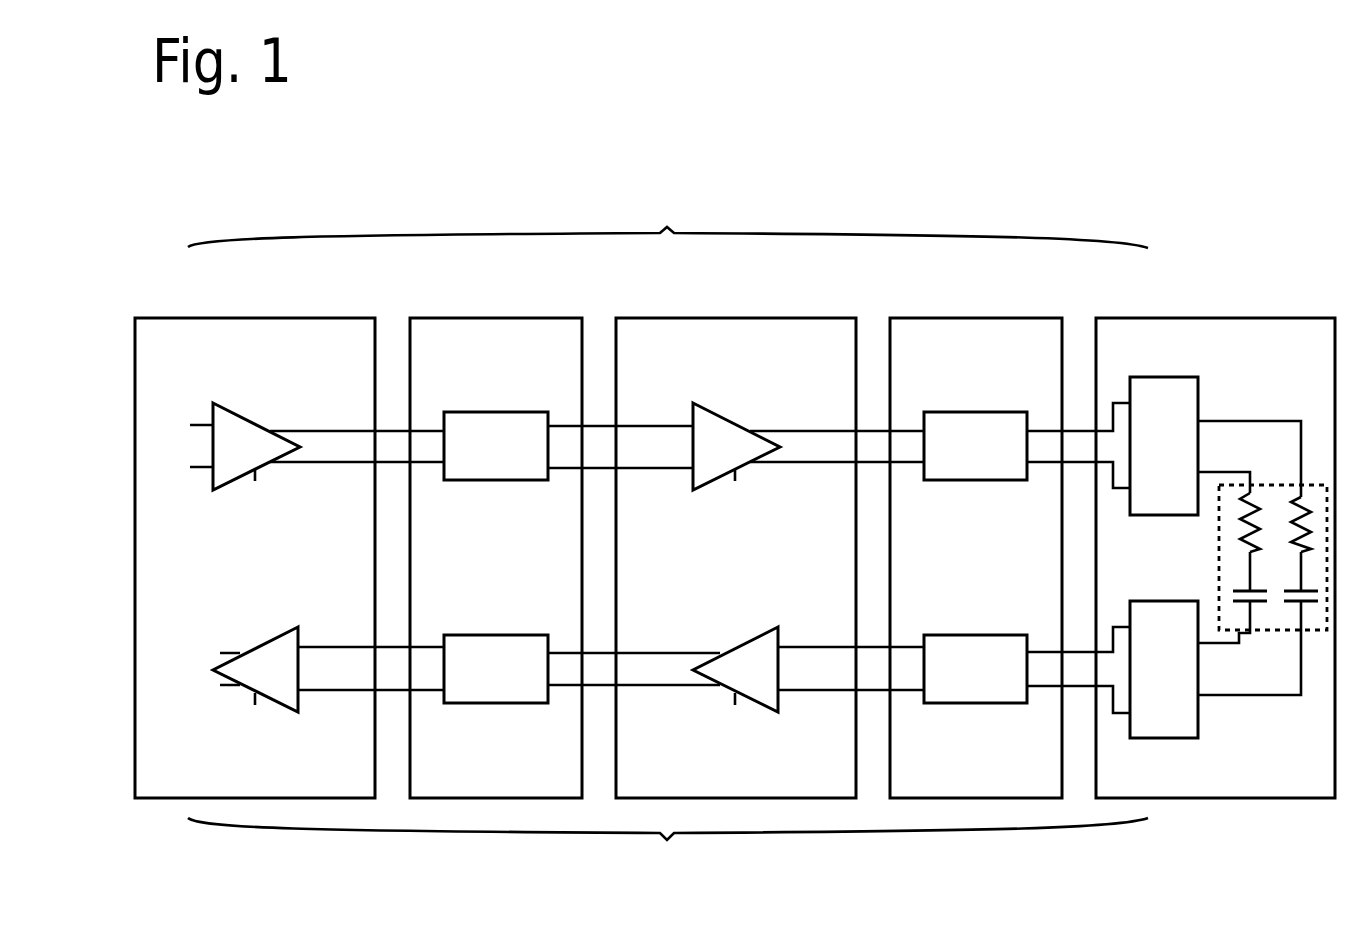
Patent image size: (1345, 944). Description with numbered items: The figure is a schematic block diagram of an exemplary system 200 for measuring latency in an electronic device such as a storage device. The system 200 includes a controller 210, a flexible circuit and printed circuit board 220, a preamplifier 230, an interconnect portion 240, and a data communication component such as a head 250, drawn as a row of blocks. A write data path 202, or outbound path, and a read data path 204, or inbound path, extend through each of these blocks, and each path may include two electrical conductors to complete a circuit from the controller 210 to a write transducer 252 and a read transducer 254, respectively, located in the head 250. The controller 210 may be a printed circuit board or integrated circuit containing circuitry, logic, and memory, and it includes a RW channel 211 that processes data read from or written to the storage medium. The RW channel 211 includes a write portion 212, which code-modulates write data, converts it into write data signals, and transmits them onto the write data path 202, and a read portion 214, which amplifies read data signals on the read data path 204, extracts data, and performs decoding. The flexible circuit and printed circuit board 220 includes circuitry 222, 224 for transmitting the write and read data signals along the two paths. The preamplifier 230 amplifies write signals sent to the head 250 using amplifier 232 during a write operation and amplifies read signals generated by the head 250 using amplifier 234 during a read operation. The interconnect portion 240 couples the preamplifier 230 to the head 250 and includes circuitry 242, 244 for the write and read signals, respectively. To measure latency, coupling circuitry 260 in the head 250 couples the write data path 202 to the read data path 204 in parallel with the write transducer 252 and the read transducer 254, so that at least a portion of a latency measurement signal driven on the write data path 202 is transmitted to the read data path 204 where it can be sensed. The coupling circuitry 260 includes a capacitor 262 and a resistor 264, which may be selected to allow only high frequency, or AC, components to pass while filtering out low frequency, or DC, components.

The system 200 is at (208, 202).
The write data path 202 is at (668, 222).
The read data path 204 is at (668, 848).
The controller 210 is at (160, 318).
The RW channel 211 is at (315, 368).
The write portion 212 is at (245, 446).
The read portion 214 is at (255, 669).
The flexible circuit and printed circuit board 220 is at (436, 318).
The circuitry 222 is at (496, 446).
The circuitry 224 is at (496, 669).
The preamplifier 230 is at (641, 318).
The amplifier 232 is at (736, 446).
The amplifier 234 is at (735, 669).
The interconnect portion 240 is at (916, 318).
The circuitry 242 is at (975, 446).
The circuitry 244 is at (975, 669).
The head 250 is at (1127, 318).
The write transducer 252 is at (1164, 446).
The read transducer 254 is at (1164, 669).
The coupling circuitry 260 is at (1219, 573).
The capacitor 262 is at (1290, 603).
The resistor 264 is at (1300, 496).